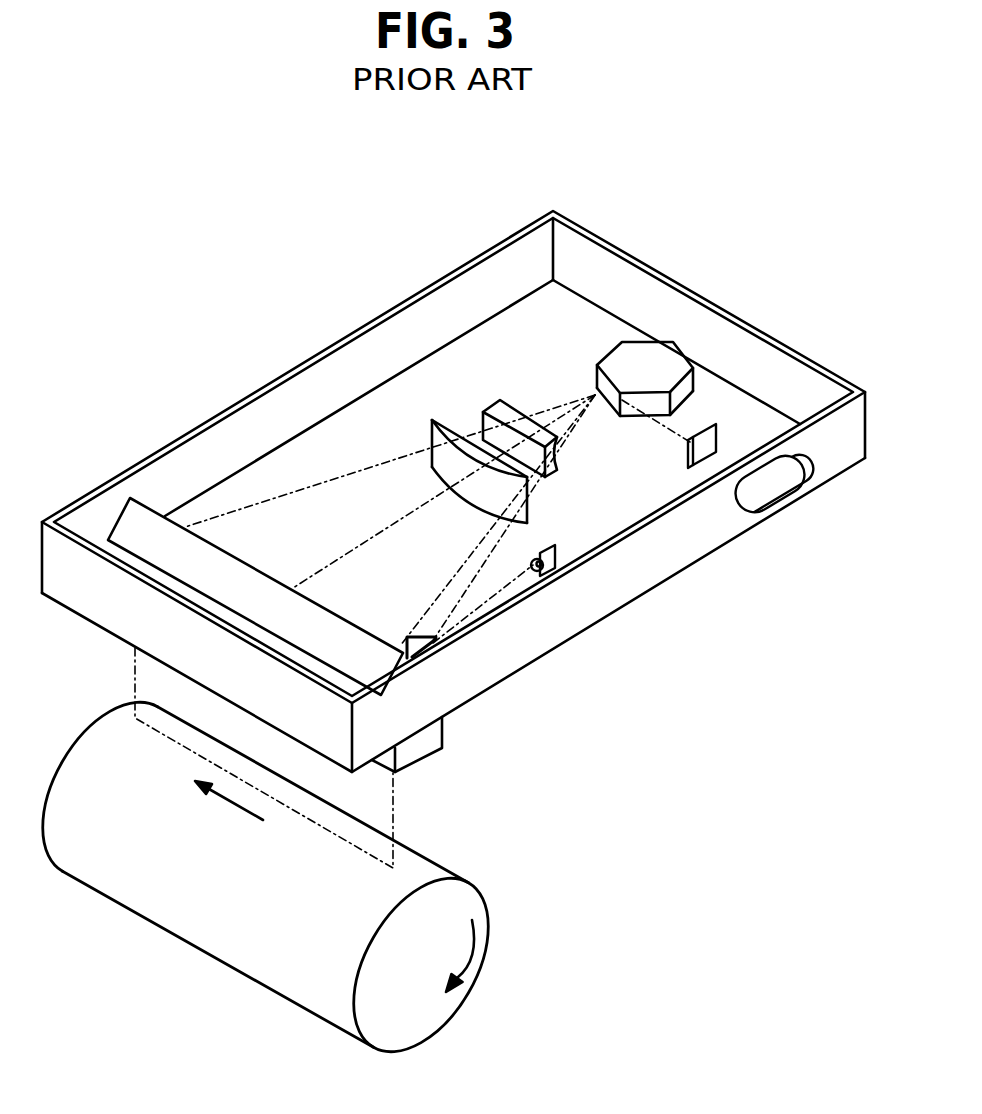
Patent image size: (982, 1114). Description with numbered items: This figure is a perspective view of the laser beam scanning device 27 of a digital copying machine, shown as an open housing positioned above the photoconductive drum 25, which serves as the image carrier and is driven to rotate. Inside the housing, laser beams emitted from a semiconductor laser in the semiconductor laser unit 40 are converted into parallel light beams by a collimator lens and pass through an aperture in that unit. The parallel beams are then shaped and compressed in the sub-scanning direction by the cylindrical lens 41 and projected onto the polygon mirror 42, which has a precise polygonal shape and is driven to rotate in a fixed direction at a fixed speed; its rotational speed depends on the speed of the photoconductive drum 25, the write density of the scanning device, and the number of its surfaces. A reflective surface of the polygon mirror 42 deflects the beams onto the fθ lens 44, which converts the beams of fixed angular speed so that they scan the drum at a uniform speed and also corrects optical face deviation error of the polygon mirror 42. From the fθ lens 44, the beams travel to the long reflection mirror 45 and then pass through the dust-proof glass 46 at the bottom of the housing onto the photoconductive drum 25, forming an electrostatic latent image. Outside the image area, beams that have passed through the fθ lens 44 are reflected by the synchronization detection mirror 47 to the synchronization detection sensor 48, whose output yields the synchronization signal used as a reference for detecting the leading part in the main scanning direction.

The photoconductive drum 25 is at (142, 897).
The laser beam scanning device 27 is at (310, 356).
The semiconductor laser unit 40 is at (782, 492).
The cylindrical lens 41 is at (720, 437).
The polygon mirror 42 is at (648, 352).
The fθ lens 44 is at (440, 432).
The reflection mirror 45 is at (130, 520).
The dust-proof glass 46 is at (416, 748).
The synchronization detection mirror 47 is at (420, 648).
The synchronization detection sensor 48 is at (550, 556).